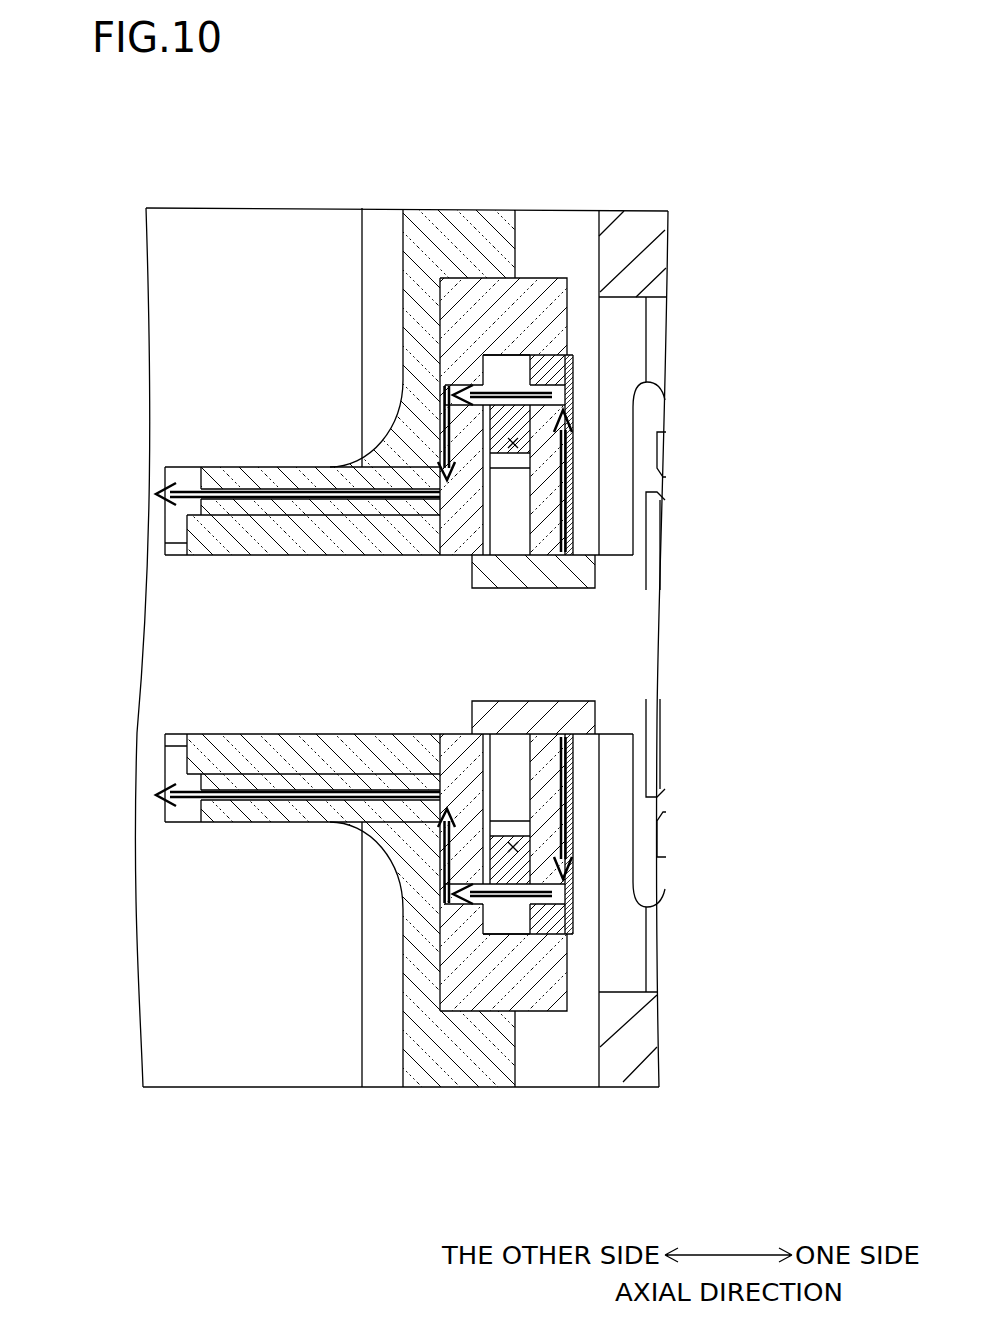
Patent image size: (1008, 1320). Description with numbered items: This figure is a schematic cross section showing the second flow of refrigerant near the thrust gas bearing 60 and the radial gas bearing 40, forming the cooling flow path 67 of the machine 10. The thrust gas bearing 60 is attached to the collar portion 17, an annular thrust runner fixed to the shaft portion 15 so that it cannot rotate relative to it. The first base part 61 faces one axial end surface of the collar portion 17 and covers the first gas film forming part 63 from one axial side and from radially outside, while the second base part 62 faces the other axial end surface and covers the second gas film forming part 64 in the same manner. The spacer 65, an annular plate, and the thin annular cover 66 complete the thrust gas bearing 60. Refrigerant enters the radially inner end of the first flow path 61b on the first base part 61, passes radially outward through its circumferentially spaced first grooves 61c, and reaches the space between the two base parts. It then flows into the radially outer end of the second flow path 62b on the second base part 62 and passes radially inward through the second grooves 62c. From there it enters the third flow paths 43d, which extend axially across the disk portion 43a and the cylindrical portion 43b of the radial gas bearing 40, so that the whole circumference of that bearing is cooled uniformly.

The rotary machine 10 is at (87, 284).
The shaft portion 15 is at (158, 632).
The collar portion 17 is at (505, 522).
The radial gas bearing 40 is at (295, 442).
The disk portion 43a is at (410, 250).
The cylindrical portion 43b is at (240, 467).
The third flow path 43d is at (240, 823).
The thrust gas bearing 60 is at (585, 1004).
The first base part 61 is at (555, 763).
The first flow path 61b is at (704, 644).
The first groove 61c is at (577, 420).
The second base part 62 is at (495, 992).
The second flow path 62b is at (364, 636).
The second groove 62c is at (415, 430).
The first gas film forming part 63 is at (535, 500).
The second gas film forming part 64 is at (560, 752).
The spacer 65 is at (525, 445).
The cover 66 is at (577, 380).
The cooling flow path 67 is at (517, 375).